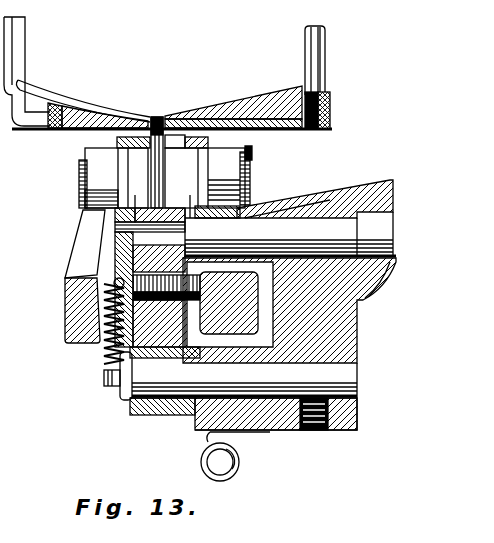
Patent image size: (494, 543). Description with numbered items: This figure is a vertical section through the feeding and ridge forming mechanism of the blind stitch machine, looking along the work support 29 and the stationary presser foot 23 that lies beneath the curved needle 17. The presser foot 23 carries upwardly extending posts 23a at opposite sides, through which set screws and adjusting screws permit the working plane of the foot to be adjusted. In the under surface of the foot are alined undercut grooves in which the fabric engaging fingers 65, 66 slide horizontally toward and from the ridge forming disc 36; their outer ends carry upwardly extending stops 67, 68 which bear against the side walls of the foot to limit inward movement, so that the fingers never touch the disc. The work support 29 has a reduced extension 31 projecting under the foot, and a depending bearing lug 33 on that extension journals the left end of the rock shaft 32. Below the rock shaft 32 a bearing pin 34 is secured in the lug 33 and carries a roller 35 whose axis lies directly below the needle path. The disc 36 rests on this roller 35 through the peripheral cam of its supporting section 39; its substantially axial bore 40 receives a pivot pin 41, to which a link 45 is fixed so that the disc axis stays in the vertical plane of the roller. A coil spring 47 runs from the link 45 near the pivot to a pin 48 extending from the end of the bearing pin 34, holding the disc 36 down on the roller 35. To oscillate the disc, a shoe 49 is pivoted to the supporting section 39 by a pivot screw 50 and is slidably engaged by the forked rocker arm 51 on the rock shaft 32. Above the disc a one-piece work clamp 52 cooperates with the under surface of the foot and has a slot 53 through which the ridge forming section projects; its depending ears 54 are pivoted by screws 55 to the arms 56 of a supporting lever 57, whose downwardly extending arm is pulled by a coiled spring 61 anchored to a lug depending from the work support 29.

The post 23a is at (26, 38).
The stop 68 is at (58, 98).
The fabric engaging finger 66 is at (66, 106).
The curved needle 17 is at (79, 110).
The ridge forming disc 36 is at (155, 117).
The fabric engaging finger 65 is at (276, 126).
The presser foot 23 is at (258, 120).
The stop 67 is at (322, 93).
The slot 53 is at (174, 134).
The axial bore 40 is at (114, 178).
The pivot pin 41 is at (202, 183).
The depending ear 54 is at (118, 146).
The screw 55 is at (82, 172).
The arm 56 is at (90, 192).
The work clamp 52 is at (246, 147).
The link 45 is at (118, 255).
The reduced extension 31 is at (325, 197).
The rock shaft 32 is at (300, 203).
The work support 29 is at (369, 170).
The bearing lug 33 is at (350, 330).
The shoe 49 is at (230, 342).
The pivot screw 50 is at (362, 300).
The forked rocker arm 51 is at (186, 342).
The supporting lever 57 is at (77, 307).
The coil spring 47 is at (102, 354).
The pin 48 is at (104, 380).
The supporting section 39 is at (161, 350).
The bearing pin 34 is at (244, 379).
The roller 35 is at (177, 416).
The coiled spring 61 is at (201, 472).